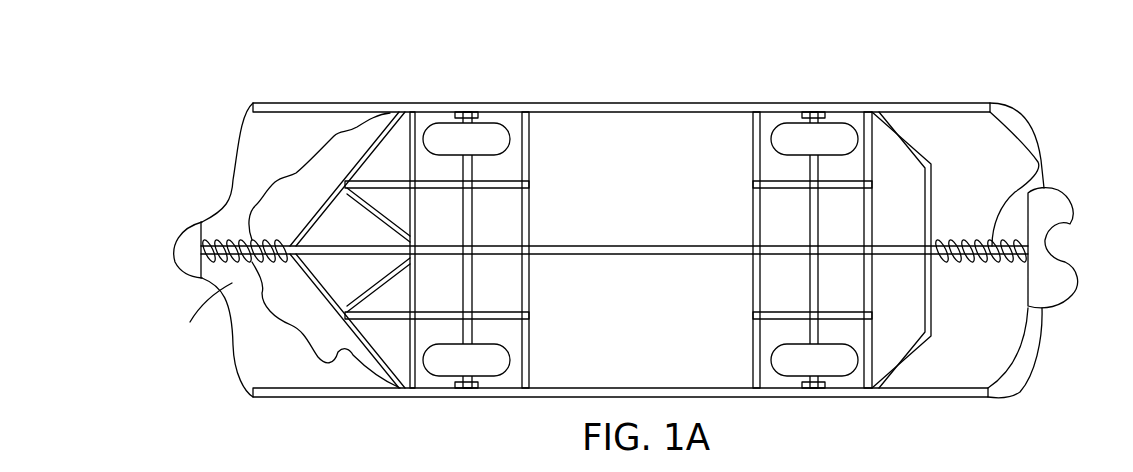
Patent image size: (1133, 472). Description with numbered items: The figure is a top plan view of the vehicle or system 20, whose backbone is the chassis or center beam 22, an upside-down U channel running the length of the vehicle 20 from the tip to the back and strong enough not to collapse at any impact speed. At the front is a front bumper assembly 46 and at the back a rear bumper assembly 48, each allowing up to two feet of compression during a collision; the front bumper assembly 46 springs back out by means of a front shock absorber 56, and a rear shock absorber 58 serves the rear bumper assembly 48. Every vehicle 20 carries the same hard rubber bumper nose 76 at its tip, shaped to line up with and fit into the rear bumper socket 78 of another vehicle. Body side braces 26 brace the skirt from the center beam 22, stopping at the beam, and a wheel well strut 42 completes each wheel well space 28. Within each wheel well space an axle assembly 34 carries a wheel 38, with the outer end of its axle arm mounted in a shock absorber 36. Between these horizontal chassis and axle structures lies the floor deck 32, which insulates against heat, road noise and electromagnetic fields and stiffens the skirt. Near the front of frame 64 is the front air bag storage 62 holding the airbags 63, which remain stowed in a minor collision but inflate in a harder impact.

The system 20 is at (865, 88).
The chassis (center beam) 22 is at (543, 244).
The body side brace 26 is at (414, 112).
The wheel well space 28 is at (524, 112).
The floor deck 32 is at (652, 188).
The axle assembly 34 is at (474, 116).
The shock absorber 36 is at (464, 108).
The wheel 38 is at (477, 150).
The wheel well strut 42 is at (476, 190).
The front bumper assembly 46 is at (232, 352).
The rear bumper assembly 48 is at (1037, 367).
The front shock absorber 56 is at (202, 315).
The rear shock absorber 58 is at (1038, 162).
The front air bag storage 62 is at (316, 199).
The airbags 63 is at (337, 347).
The front of frame 64 is at (322, 244).
The tip of vehicle and bumper nose 76 is at (178, 235).
The rear vehicle bumper socket 78 is at (1047, 243).